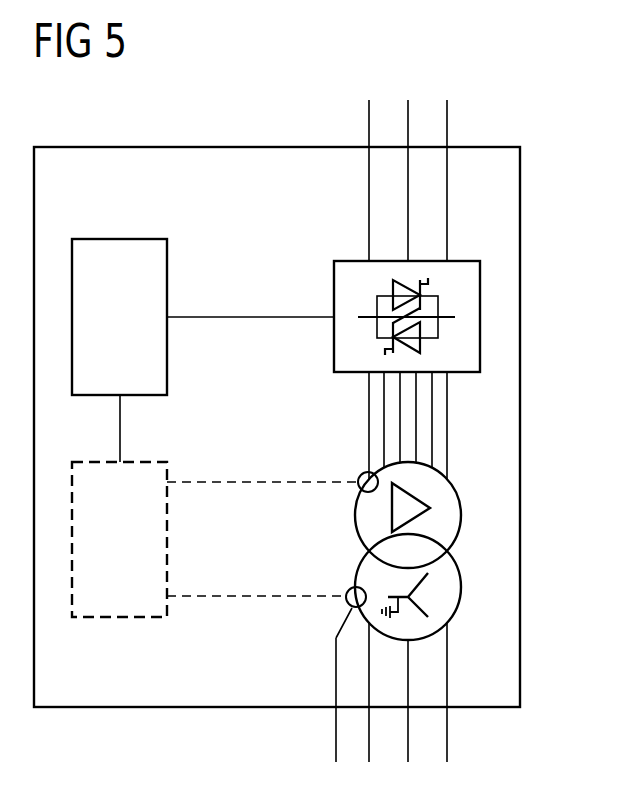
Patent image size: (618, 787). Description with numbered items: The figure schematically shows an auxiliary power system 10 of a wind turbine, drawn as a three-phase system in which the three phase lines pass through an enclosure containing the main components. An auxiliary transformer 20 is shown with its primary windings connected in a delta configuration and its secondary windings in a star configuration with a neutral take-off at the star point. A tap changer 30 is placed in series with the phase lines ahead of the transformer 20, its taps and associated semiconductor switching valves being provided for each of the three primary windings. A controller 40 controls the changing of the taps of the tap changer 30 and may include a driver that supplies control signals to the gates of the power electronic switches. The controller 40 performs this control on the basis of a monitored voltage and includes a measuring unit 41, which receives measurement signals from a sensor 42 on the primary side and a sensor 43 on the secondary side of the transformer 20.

The auxiliary power system 10 is at (492, 110).
The auxiliary transformer 20 is at (332, 547).
The tap changer 30 is at (334, 288).
The controller 40 is at (120, 239).
The measuring unit 41 is at (133, 617).
The sensor 42 is at (360, 475).
The sensor 43 is at (348, 606).